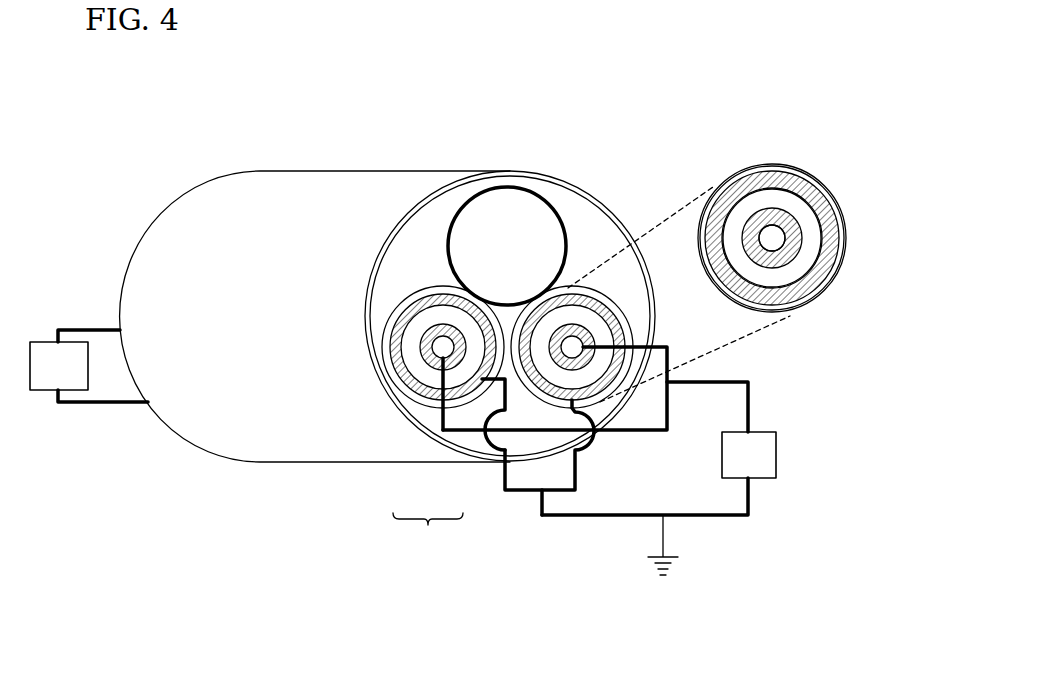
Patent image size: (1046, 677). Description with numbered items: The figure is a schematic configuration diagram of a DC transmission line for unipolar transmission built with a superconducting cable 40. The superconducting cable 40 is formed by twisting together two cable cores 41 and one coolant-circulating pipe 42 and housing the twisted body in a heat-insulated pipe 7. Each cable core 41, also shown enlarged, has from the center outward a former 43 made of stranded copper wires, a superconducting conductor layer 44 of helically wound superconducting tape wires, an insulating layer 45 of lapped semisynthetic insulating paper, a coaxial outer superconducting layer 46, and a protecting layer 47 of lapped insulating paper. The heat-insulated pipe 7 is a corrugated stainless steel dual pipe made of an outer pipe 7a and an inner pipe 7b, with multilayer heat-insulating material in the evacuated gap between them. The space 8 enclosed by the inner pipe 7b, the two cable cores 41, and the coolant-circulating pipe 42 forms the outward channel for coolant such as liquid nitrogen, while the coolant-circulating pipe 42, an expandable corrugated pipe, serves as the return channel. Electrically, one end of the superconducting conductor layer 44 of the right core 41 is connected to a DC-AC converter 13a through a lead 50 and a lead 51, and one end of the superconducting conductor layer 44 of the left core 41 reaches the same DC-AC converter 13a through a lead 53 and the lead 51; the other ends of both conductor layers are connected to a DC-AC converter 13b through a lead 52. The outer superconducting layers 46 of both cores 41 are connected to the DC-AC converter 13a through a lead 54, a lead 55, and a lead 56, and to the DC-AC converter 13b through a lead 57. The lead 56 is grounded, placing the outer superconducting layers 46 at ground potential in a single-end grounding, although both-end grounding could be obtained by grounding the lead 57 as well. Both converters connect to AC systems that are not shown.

The superconducting cable 40 is at (311, 169).
The space 8 is at (442, 216).
The coolant-circulating pipe 42 is at (522, 188).
The cable core 41 is at (428, 409).
The former 43 is at (776, 236).
The superconducting conductor layer 44 is at (420, 350).
The insulating layer 45 is at (800, 277).
The outer superconducting layer 46 is at (402, 383).
The protecting layer 47 is at (812, 180).
The lead 50 is at (653, 340).
The outer pipe 7a is at (437, 442).
The inner pipe 7b is at (485, 458).
The heat-insulated pipe 7 is at (428, 532).
The lead 53 is at (631, 433).
The lead 54 is at (578, 468).
The lead 55 is at (532, 494).
The lead 56 is at (700, 517).
The lead 51 is at (750, 412).
The DC-AC converter 13a is at (749, 455).
The DC-AC converter 13b is at (59, 366).
The lead 52 is at (100, 327).
The lead 57 is at (95, 406).